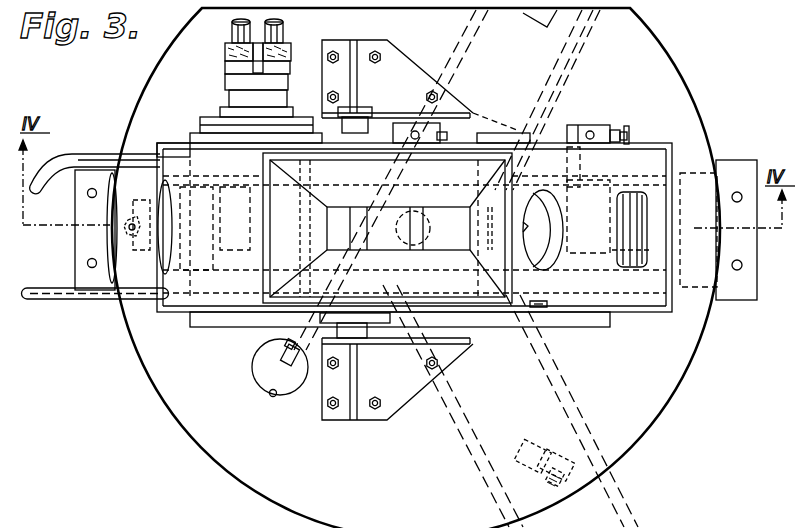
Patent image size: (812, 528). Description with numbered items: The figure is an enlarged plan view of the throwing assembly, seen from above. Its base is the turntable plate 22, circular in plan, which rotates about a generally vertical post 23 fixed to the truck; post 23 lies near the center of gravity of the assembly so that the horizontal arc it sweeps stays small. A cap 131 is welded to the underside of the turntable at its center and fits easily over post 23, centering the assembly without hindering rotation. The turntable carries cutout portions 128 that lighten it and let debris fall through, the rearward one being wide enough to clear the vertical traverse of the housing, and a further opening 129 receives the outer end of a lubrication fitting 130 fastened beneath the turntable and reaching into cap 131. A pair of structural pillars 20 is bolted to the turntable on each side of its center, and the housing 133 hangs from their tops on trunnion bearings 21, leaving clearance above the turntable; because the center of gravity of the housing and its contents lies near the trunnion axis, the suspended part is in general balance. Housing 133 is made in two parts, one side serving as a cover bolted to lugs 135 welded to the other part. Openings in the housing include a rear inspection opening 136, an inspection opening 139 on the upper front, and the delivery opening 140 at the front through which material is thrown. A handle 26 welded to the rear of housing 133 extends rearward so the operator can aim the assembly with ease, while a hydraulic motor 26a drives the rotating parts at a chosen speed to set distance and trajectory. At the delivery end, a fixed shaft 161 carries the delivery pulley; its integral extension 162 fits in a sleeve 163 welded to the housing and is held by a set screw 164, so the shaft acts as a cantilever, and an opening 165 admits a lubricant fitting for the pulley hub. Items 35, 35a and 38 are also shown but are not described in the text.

The turntable plate 22 is at (670, 58).
The tie rods (hidden) 35a is at (592, 34).
The handle 26 is at (42, 302).
The hydraulic motor 26a is at (227, 83).
The lower tube / fitting 38 is at (520, 443).
The housing 133 is at (167, 313).
The cutout portions 128 is at (206, 320).
The inspection opening 136 is at (176, 143).
The cap 131 is at (372, 183).
The post 23 is at (380, 228).
The pillars 20 is at (392, 68).
The trunnion bearings 21 is at (362, 108).
The lubrication fitting 130 is at (262, 353).
The opening 129 is at (272, 397).
The opening 165 is at (592, 131).
The integral extension 162 is at (604, 126).
The set screw 164 is at (616, 128).
The sleeve 163 is at (628, 136).
The inspection opening 139 is at (528, 257).
The fixed shaft 161 is at (562, 270).
The delivery opening 140 is at (657, 262).
The lugs 135 is at (540, 318).
The end plate 35 is at (735, 160).